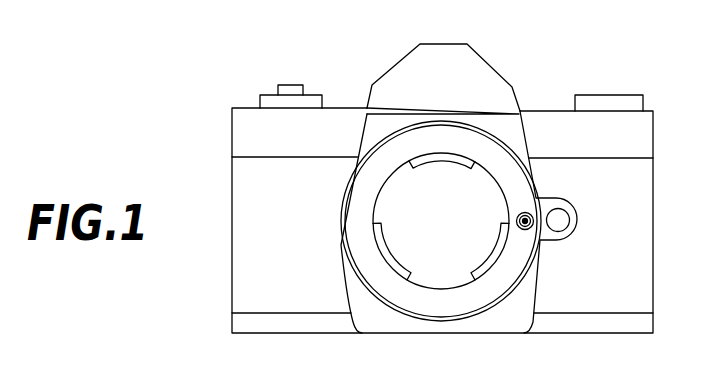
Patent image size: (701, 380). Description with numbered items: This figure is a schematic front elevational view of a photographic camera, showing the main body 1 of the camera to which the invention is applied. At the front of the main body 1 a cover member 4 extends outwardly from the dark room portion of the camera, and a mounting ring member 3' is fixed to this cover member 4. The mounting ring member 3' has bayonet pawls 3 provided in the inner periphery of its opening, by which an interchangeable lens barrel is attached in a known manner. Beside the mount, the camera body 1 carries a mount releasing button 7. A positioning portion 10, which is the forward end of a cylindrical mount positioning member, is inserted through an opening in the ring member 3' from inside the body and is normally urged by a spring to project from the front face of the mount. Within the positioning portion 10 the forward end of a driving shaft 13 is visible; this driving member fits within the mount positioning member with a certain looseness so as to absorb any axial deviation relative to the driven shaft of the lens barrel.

The main body 1 is at (378, 59).
The bayonet pawls 3 is at (441, 221).
The mounting ring member 3' is at (419, 221).
The cover member 4 is at (522, 320).
The mount releasing button 7 is at (565, 220).
The positioning portion 10 is at (527, 229).
The driving shaft 13 is at (517, 216).